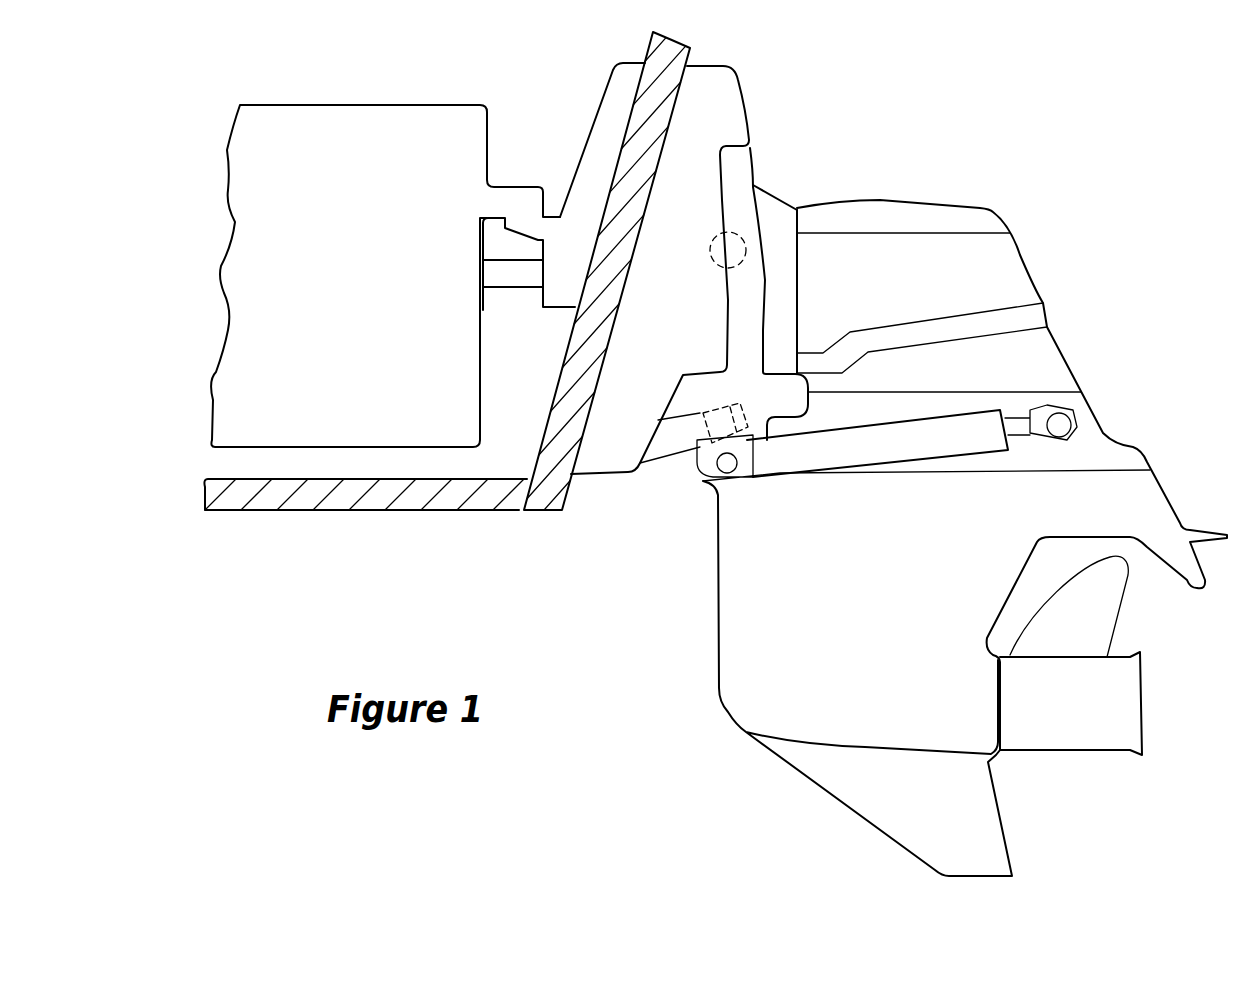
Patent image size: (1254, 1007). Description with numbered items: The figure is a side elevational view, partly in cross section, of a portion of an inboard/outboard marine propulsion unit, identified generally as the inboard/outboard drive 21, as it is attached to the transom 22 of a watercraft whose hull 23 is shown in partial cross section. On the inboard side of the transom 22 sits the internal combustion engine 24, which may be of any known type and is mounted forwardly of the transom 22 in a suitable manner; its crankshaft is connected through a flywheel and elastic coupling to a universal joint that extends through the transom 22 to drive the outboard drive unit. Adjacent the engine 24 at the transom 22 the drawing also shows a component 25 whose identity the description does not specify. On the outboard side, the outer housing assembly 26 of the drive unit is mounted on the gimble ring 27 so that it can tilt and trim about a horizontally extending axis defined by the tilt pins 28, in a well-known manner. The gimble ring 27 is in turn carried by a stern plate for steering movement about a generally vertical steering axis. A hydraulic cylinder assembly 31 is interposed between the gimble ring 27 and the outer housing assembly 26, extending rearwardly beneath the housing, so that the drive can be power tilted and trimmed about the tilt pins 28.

The inboard/outboard drive 21 is at (893, 144).
The transom 22 is at (692, 60).
The hull 23 is at (333, 510).
The internal combustion engine 24 is at (327, 104).
The transom fitting 25 is at (507, 290).
The outer housing assembly 26 is at (1011, 234).
The gimble ring 27 is at (737, 165).
The tilt pins 28 is at (746, 252).
The hydraulic cylinder assembly 31 is at (778, 461).